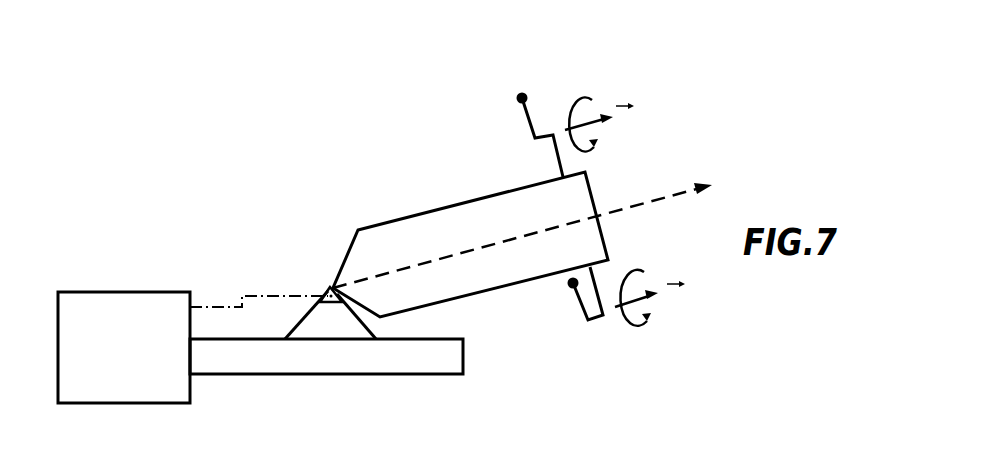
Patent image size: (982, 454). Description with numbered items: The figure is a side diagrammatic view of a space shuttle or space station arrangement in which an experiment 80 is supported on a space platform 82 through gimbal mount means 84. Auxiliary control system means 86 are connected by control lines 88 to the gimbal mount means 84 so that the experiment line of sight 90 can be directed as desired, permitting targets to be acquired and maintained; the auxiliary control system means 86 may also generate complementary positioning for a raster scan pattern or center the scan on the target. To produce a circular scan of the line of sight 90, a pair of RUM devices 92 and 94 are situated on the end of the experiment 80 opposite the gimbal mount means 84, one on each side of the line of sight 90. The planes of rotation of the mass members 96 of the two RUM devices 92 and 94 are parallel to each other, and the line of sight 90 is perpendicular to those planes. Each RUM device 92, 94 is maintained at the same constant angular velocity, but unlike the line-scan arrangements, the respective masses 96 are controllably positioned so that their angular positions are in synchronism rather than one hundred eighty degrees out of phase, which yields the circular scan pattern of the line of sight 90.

The experiment 80 is at (475, 199).
The space platform 82 is at (463, 362).
The gimbal mount means 84 is at (327, 285).
The auxiliary control system means 86 is at (145, 292).
The control lines 88 is at (258, 293).
The line of sight 90 is at (653, 200).
The RUM device 92 is at (590, 77).
The RUM device 94 is at (651, 347).
The mass members 96 is at (517, 97).